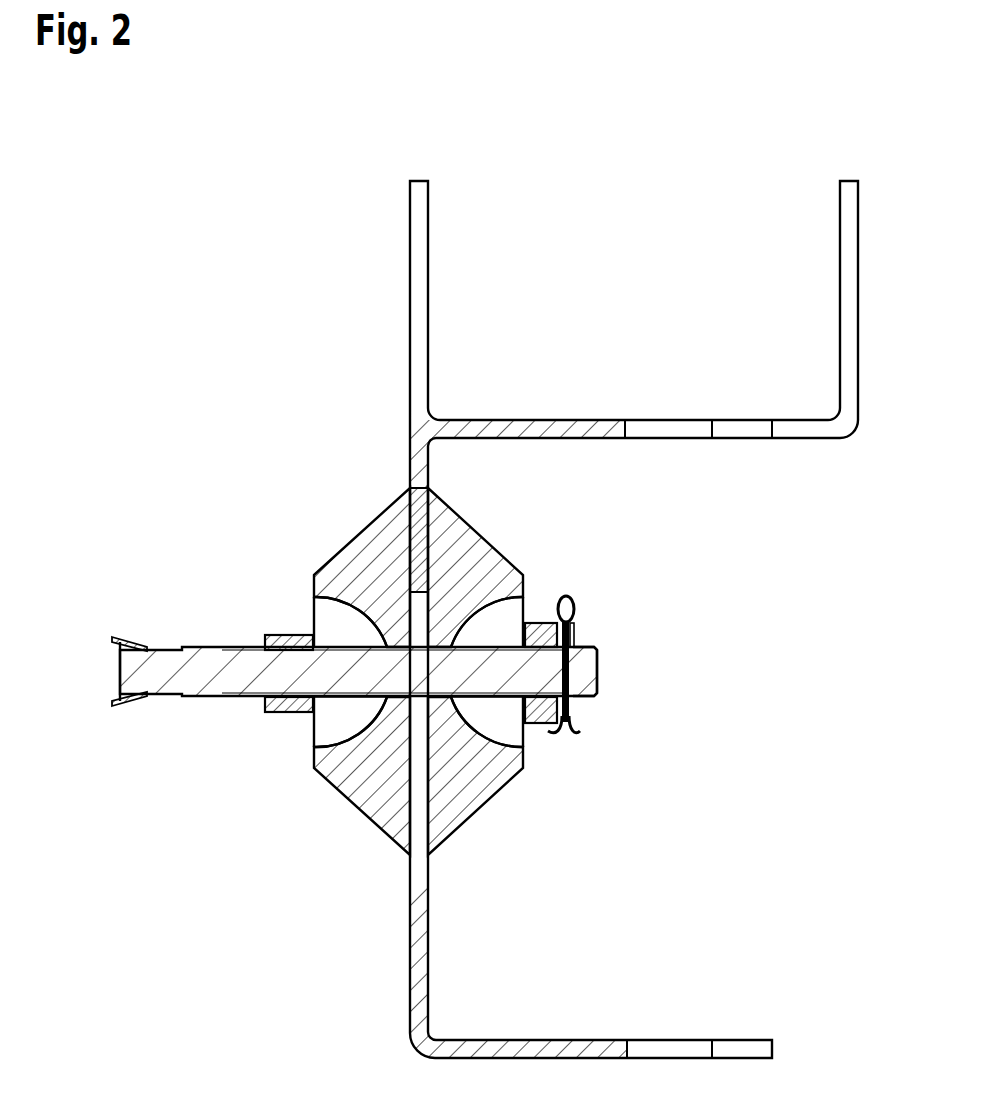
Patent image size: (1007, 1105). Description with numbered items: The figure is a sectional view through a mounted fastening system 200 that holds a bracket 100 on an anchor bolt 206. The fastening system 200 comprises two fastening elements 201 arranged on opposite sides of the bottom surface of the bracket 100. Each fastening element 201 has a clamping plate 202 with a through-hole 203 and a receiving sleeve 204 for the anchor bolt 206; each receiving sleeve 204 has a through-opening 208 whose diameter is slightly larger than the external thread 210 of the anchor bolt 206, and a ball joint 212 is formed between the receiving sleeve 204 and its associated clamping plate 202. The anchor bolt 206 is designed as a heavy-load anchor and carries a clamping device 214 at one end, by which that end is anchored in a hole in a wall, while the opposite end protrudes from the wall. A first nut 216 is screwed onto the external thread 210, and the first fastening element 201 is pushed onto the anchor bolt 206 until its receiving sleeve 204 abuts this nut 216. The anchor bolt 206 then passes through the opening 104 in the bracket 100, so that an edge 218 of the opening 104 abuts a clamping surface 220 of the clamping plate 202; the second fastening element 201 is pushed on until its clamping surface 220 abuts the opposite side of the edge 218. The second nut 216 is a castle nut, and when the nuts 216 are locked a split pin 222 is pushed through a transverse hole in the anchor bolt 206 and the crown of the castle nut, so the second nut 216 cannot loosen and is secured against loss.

The bracket 100 is at (410, 455).
The opening 104 is at (416, 886).
The fastening system 200 is at (290, 500).
The fastening element 201 is at (405, 520).
The clamping plate 202 is at (462, 545).
The through-hole 203 is at (440, 652).
The receiving sleeve 204 is at (332, 613).
The anchor bolt 206 is at (578, 672).
The through-opening 208 is at (340, 660).
The external thread 210 is at (585, 646).
The ball joint 212 is at (486, 610).
The clamping device 214 is at (119, 716).
The nut 216 is at (290, 713).
The edge 218 is at (413, 563).
The clamping surface 220 is at (413, 537).
The split pin 222 is at (574, 729).